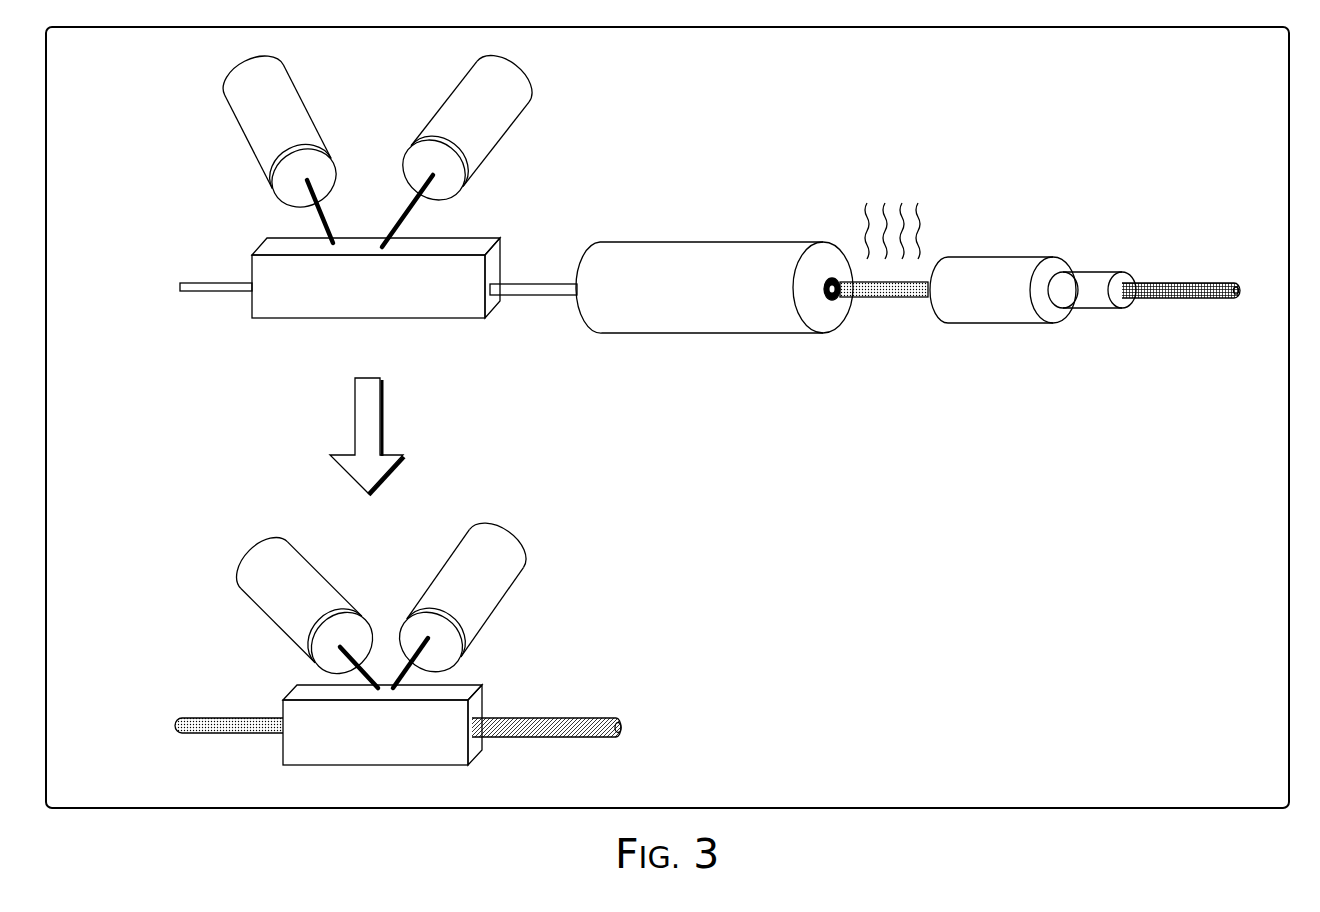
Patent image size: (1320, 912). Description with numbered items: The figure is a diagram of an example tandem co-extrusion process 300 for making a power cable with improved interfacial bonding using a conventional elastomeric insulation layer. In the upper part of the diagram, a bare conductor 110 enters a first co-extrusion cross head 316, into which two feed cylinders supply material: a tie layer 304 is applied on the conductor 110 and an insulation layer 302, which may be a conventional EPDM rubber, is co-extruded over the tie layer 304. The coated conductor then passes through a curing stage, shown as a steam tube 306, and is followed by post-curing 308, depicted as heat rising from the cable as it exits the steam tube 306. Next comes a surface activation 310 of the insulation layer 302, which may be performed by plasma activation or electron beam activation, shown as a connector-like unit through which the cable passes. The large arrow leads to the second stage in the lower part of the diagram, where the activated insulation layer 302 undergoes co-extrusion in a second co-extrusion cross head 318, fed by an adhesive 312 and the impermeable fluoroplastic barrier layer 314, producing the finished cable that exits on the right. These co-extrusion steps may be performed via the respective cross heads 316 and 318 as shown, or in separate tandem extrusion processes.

The tandem co-extrusion process 300 is at (684, 70).
The conductor 110 is at (213, 292).
The insulation layer 302 is at (482, 95).
The tie layer 304 is at (250, 118).
The steam tube 306 is at (660, 245).
The post-curing 308 is at (867, 188).
The surface activation 310 is at (1022, 260).
The adhesive 312 is at (258, 578).
The impermeable fluoroplastic barrier layer 314 is at (475, 553).
The co-extrusion cross head 316 is at (266, 240).
The co-extrusion cross head 318 is at (295, 692).